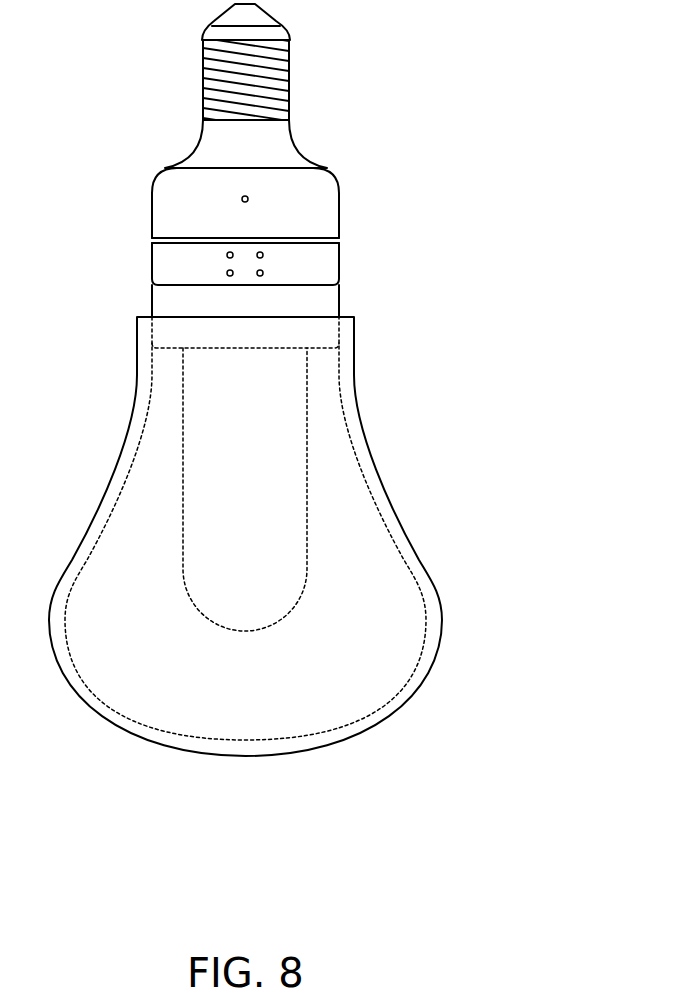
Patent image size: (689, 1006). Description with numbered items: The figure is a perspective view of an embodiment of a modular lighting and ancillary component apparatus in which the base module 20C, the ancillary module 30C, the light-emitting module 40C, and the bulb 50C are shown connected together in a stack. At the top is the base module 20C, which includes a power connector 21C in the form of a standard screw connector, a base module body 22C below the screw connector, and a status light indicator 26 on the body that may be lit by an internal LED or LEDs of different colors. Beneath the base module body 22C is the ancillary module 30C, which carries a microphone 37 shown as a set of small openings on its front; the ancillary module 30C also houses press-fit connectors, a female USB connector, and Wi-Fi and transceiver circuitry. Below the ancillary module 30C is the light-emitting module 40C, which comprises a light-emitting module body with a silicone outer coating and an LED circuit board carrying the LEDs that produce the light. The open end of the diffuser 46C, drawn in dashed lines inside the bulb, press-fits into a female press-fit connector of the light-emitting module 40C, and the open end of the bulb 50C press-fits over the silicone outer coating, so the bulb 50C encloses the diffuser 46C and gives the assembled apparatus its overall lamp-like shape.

The power connector 21C is at (253, 87).
The base module 20C is at (312, 160).
The base module body 22C is at (173, 190).
The status light indicator 26 is at (250, 198).
The ancillary module 30C is at (318, 265).
The microphone 37 is at (227, 255).
The light-emitting module 40C is at (318, 310).
The diffuser 46C is at (283, 492).
The bulb 50C is at (392, 592).